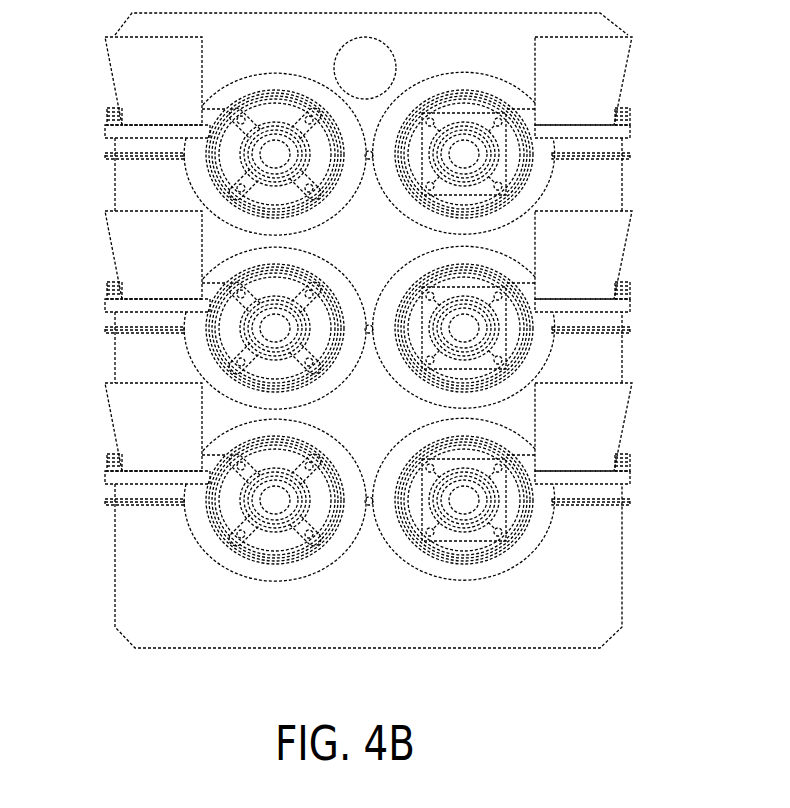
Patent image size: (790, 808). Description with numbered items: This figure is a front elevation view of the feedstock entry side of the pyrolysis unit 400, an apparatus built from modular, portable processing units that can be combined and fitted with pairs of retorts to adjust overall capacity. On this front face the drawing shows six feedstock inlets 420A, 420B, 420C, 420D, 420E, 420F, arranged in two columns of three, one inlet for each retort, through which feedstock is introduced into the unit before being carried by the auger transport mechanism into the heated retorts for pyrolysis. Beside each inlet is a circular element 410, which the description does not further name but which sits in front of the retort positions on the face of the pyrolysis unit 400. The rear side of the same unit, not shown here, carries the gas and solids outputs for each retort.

The pyrolysis unit 400 is at (610, 603).
The wheel 410 is at (513, 565).
The feedstock inlet 420A is at (122, 412).
The feedstock inlet 420B is at (122, 250).
The feedstock inlet 420C is at (122, 66).
The feedstock inlet 420D is at (612, 413).
The feedstock inlet 420E is at (612, 252).
The feedstock inlet 420F is at (610, 68).